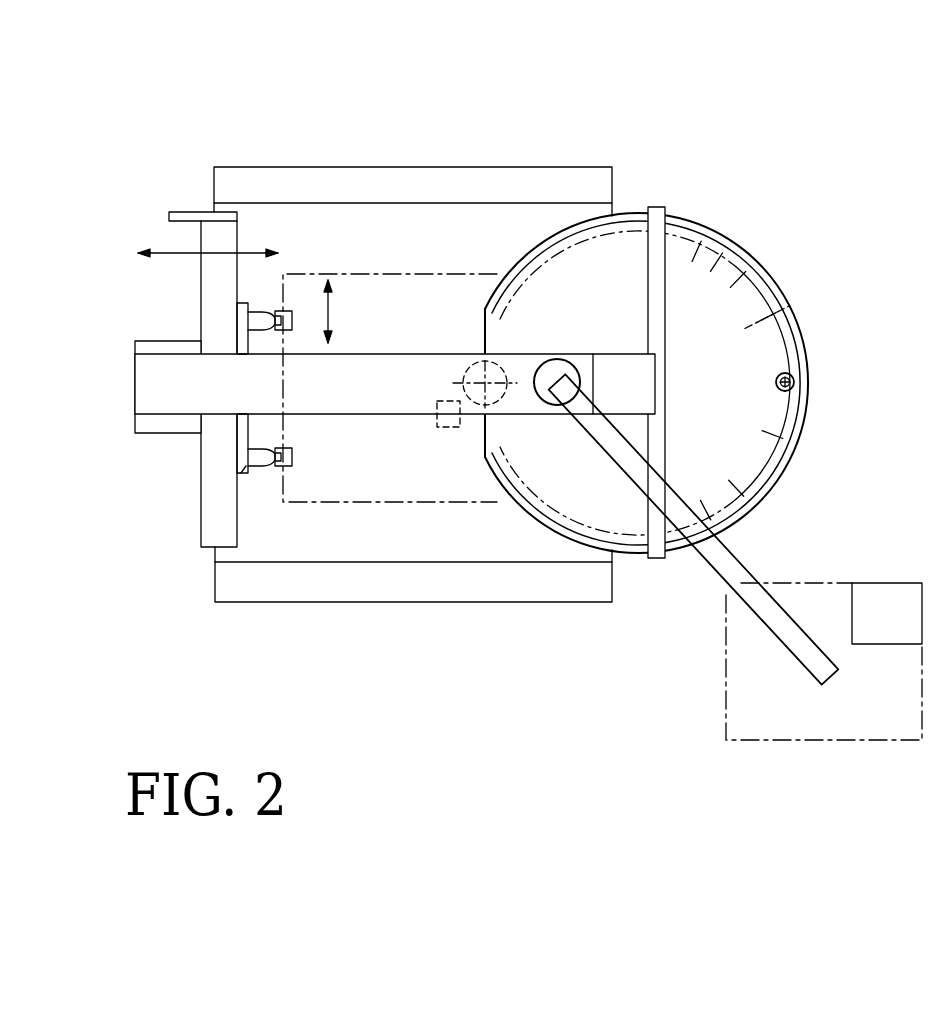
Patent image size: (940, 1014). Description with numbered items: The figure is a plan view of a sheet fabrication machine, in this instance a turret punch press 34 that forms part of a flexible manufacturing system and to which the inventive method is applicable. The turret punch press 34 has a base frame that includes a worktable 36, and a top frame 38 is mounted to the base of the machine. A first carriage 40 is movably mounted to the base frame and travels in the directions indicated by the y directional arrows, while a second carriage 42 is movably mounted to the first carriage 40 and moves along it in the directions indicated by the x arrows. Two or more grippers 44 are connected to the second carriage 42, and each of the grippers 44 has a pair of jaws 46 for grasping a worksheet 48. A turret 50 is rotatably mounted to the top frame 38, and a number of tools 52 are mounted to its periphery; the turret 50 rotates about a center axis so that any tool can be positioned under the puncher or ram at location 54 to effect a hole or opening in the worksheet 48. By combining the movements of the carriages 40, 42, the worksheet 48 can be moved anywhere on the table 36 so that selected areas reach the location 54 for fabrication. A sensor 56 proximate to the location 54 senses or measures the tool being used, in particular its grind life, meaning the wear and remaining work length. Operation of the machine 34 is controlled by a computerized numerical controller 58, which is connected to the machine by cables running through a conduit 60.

The turret punch press 34 is at (633, 123).
The worktable 36 is at (540, 602).
The top frame 38 is at (160, 385).
The first carriage 40 is at (217, 483).
The second carriage 42 is at (246, 472).
The grippers 44 is at (257, 462).
The jaws 46 is at (293, 453).
The worksheet 48 is at (392, 500).
The turret 50 is at (735, 244).
The tools 52 is at (770, 318).
The location 54 is at (482, 380).
The sensor 56 is at (448, 428).
The computerized numerical controller 58 is at (822, 713).
The conduit 60 is at (730, 553).